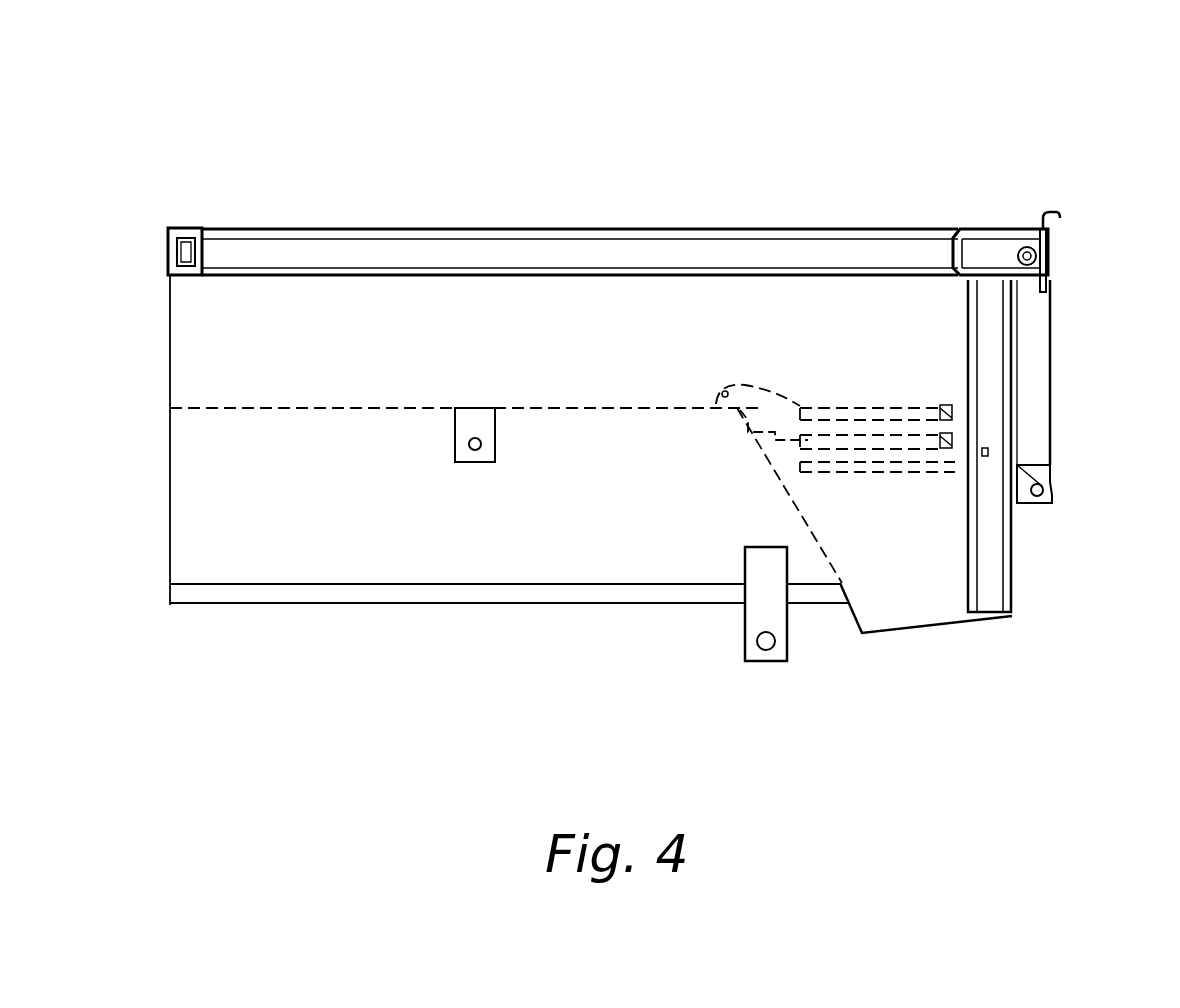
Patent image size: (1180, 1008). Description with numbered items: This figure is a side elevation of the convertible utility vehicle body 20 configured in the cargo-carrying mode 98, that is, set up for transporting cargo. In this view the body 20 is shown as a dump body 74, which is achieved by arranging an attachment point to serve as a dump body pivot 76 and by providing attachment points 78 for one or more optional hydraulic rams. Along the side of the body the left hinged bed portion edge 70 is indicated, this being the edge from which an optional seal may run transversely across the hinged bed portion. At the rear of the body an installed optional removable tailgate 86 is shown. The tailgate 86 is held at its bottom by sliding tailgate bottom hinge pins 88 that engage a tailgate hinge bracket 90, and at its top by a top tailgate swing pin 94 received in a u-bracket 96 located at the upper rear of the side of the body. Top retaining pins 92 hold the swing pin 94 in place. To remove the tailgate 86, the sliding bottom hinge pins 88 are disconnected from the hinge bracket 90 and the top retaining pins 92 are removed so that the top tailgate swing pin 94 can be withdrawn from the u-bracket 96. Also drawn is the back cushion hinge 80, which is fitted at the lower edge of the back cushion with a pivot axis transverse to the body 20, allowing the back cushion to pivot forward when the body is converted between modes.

The convertible utility vehicle body 20 is at (333, 165).
The left hinged bed portion edge 70 is at (978, 410).
The dump body 74 is at (335, 677).
The dump body pivot 76 is at (750, 618).
The attachment points 78 is at (488, 428).
The back cushion hinge 80 is at (985, 452).
The removable tailgate 86 is at (1040, 315).
The sliding tailgate bottom hinge pins 88 is at (1042, 500).
The tailgate hinge bracket 90 is at (1036, 480).
The top retaining pins 92 is at (1055, 214).
The top tailgate swing pin 94 is at (1018, 250).
The u-bracket 96 is at (1050, 264).
The cargo-carrying mode 98 is at (872, 218).